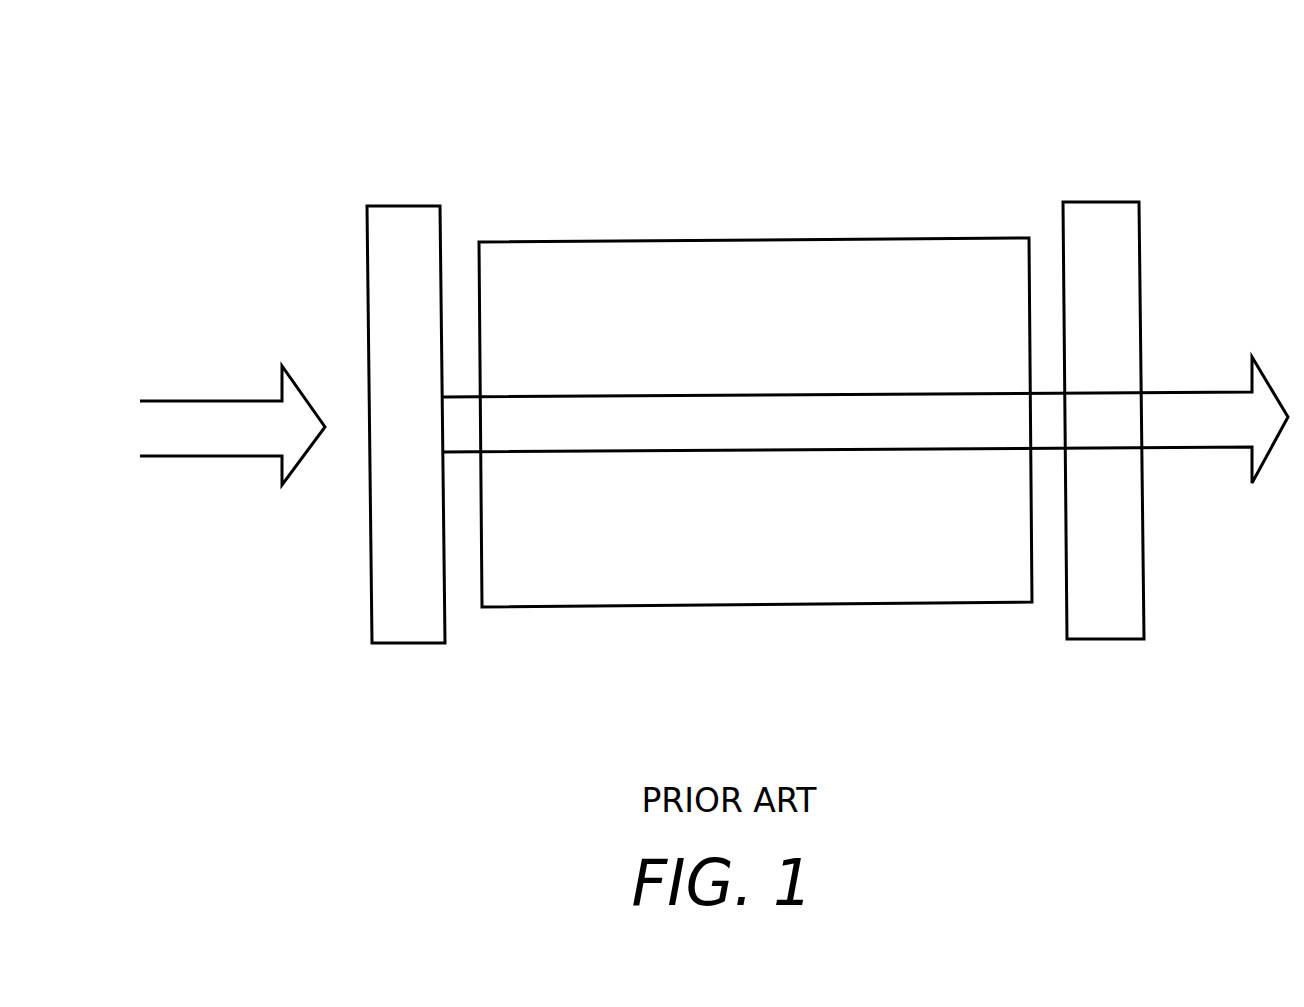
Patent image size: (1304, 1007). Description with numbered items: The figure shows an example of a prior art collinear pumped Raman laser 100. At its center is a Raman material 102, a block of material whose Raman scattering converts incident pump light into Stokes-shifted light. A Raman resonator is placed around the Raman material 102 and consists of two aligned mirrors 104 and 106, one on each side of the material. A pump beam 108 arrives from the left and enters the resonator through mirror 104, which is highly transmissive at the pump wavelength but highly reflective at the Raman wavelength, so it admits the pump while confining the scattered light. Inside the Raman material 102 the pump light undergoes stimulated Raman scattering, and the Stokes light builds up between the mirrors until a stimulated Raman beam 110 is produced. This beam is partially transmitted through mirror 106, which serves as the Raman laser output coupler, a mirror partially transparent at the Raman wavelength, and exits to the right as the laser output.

The collinear pumped Raman laser 100 is at (472, 114).
The Raman material 102 is at (822, 239).
The mirror 104 is at (440, 235).
The mirror 106 is at (1139, 260).
The pump beam 108 is at (178, 456).
The stimulated Raman beam 110 is at (1170, 447).